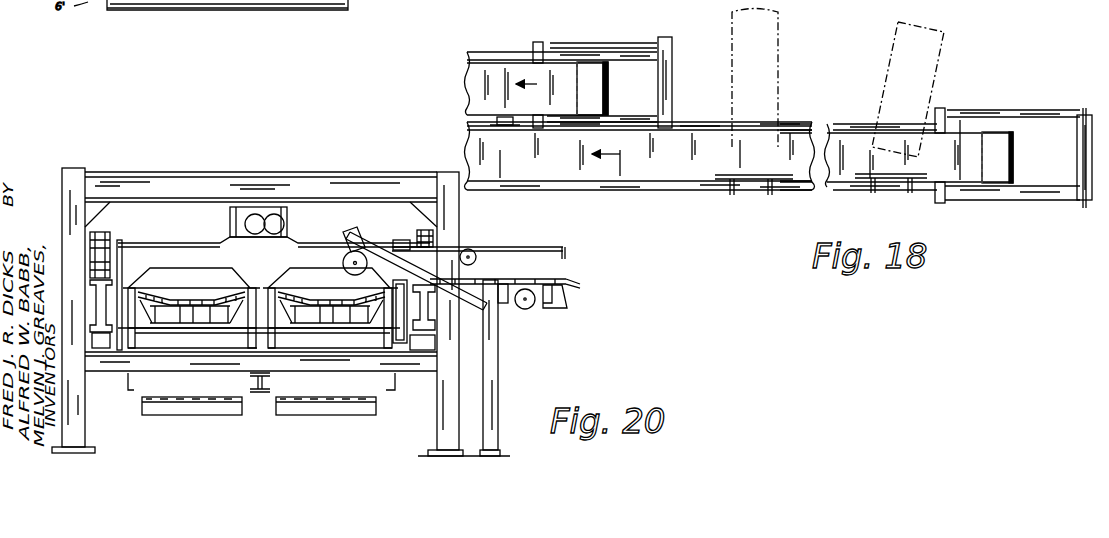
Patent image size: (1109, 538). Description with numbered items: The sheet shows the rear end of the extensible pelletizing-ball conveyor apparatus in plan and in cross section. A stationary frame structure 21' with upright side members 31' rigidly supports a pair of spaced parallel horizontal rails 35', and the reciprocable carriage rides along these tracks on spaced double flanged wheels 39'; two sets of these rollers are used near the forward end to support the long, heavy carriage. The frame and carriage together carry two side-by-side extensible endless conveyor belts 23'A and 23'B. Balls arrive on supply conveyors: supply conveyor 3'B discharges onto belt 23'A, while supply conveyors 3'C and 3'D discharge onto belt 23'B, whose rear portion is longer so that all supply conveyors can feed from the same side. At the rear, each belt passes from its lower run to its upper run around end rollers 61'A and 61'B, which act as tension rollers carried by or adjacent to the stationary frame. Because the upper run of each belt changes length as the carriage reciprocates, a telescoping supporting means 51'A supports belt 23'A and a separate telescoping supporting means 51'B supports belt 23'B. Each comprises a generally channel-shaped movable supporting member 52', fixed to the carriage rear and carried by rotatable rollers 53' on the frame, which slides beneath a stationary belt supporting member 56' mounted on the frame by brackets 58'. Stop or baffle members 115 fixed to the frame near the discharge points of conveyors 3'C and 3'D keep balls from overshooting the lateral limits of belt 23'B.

In FIG. 20, the upright side members 31' is at (61, 310).
In FIG. 20, the stationary frame structure 21' is at (261, 181).
In FIG. 18, the stationary frame structure 21' is at (640, 171).
In FIG. 20, the double flanged wheels 39' is at (293, 249).
In FIG. 20, the supply conveyor 3'B is at (461, 265).
In FIG. 20, the extensible endless conveyor belt 23'B is at (257, 297).
In FIG. 18, the extensible endless conveyor belt 23'B is at (936, 150).
In FIG. 20, the extensible endless conveyor belt 23'A is at (330, 272).
In FIG. 18, the extensible endless conveyor belt 23'A is at (569, 74).
In FIG. 20, the brackets 58' is at (258, 302).
In FIG. 20, the stationary belt supporting member 56' is at (261, 289).
In FIG. 20, the movable supporting member 52' is at (261, 324).
In FIG. 20, the rotatable rollers 53' is at (260, 337).
In FIG. 20, the telescoping supporting means 51'B is at (192, 373).
In FIG. 20, the telescoping supporting means 51'A is at (326, 375).
In FIG. 20, the rails 35' is at (446, 317).
In FIG. 18, the end roller 61'A is at (599, 70).
In FIG. 18, the end roller 61'B is at (1004, 139).
In FIG. 18, the supply conveyor 3'C is at (782, 74).
In FIG. 18, the supply conveyor 3'D is at (939, 89).
In FIG. 18, the stop or baffle members 115 is at (722, 173).